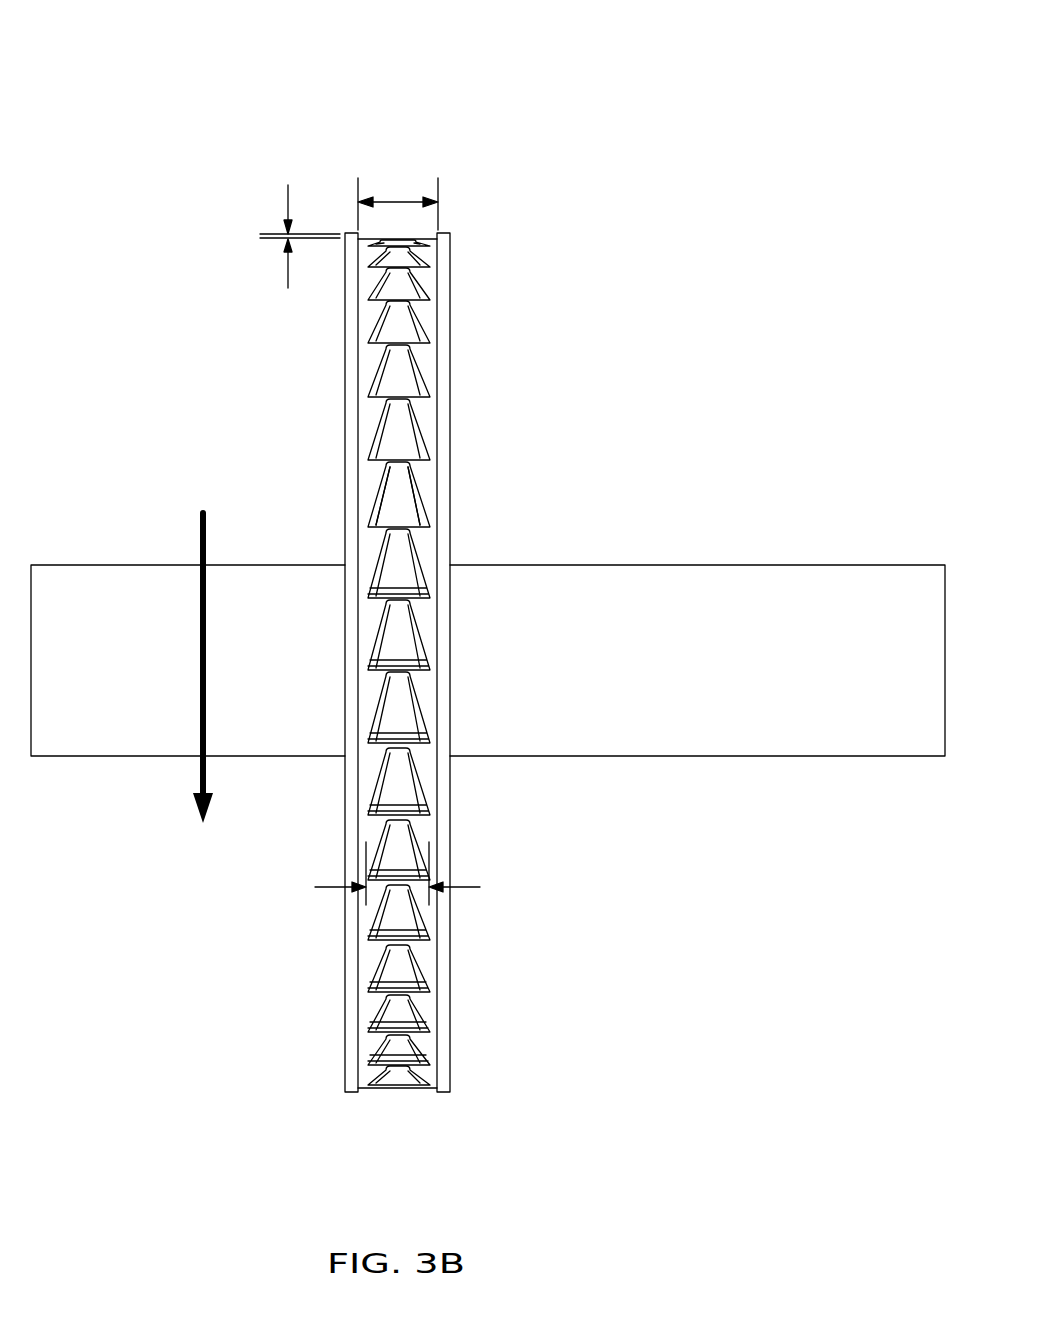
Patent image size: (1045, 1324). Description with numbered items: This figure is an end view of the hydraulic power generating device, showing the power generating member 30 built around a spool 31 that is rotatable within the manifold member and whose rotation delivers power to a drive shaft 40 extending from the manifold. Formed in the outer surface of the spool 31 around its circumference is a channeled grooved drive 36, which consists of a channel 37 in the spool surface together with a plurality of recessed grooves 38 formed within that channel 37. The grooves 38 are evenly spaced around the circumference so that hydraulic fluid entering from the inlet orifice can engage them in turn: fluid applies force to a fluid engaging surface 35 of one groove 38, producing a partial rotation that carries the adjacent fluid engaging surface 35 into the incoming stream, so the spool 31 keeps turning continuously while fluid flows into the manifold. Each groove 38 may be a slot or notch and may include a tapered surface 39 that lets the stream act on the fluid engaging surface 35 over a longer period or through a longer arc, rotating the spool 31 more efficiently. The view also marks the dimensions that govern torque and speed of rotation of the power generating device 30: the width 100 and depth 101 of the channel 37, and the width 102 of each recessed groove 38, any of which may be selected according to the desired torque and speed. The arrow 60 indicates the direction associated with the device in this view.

The power generating member 30 is at (663, 85).
The spool 31 is at (352, 945).
The fluid engaging surface 35 is at (402, 523).
The channeled grooved drive 36 is at (400, 125).
The channel 37 is at (484, 702).
The recessed groove 38 is at (403, 632).
The tapered surface 39 is at (395, 495).
The drive shaft 40 is at (712, 614).
The flow direction 60 is at (200, 594).
The width of the channel 100 is at (400, 202).
The depth of the channel 101 is at (285, 272).
The width of the recessed groove 102 is at (465, 888).